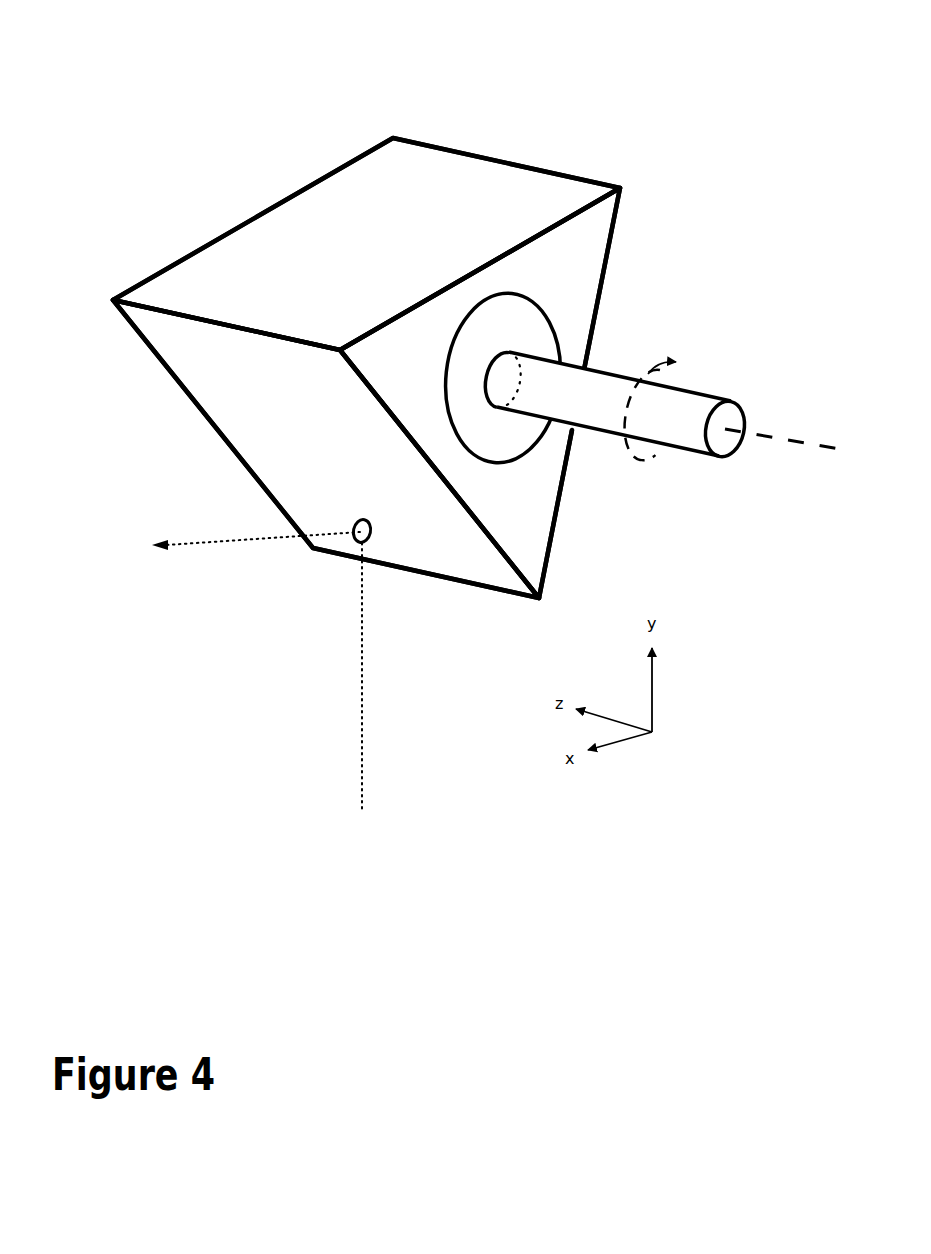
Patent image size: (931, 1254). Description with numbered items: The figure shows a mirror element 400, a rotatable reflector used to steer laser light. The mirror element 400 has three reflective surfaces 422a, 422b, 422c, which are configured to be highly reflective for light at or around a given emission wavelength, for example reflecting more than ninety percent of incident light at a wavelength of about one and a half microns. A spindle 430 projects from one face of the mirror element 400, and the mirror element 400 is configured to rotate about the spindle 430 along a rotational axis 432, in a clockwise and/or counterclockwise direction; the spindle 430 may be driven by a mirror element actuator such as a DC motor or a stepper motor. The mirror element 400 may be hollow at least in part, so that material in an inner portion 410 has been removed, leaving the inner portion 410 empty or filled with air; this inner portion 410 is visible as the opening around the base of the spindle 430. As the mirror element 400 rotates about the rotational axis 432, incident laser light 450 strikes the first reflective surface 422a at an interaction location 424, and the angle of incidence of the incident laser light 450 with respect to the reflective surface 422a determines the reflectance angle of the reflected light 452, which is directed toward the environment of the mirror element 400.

The mirror element 400 is at (666, 77).
The inner portion 410 is at (540, 343).
The first reflective surface 422a is at (223, 443).
The reflective surface 422b is at (615, 302).
The reflective surface 422c is at (243, 222).
The interaction location 424 is at (354, 541).
The spindle 430 is at (713, 395).
The rotational axis 432 is at (762, 430).
The incident laser light 450 is at (364, 663).
The reflected light 452 is at (176, 546).